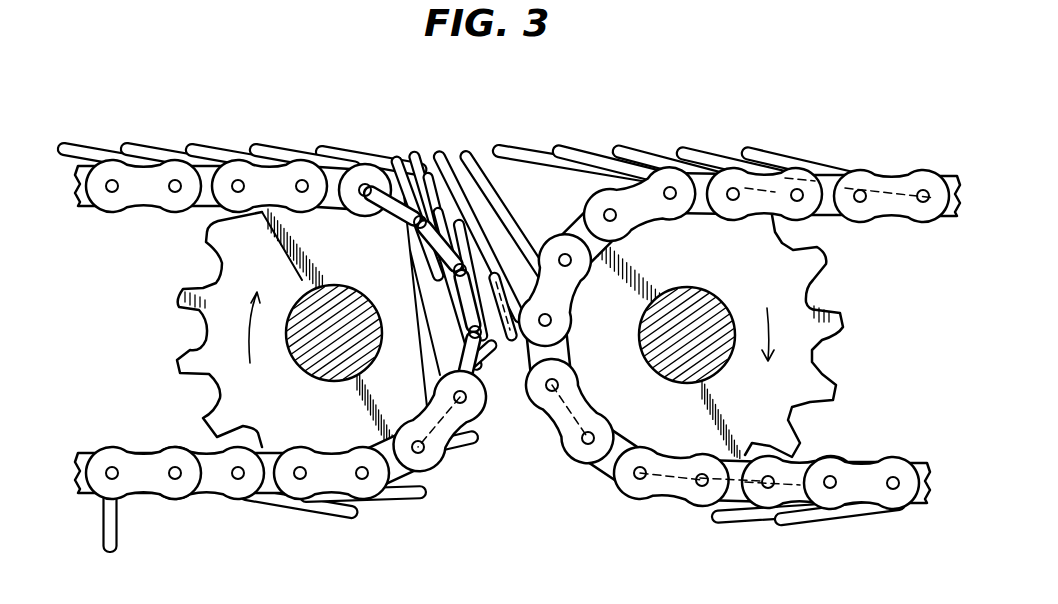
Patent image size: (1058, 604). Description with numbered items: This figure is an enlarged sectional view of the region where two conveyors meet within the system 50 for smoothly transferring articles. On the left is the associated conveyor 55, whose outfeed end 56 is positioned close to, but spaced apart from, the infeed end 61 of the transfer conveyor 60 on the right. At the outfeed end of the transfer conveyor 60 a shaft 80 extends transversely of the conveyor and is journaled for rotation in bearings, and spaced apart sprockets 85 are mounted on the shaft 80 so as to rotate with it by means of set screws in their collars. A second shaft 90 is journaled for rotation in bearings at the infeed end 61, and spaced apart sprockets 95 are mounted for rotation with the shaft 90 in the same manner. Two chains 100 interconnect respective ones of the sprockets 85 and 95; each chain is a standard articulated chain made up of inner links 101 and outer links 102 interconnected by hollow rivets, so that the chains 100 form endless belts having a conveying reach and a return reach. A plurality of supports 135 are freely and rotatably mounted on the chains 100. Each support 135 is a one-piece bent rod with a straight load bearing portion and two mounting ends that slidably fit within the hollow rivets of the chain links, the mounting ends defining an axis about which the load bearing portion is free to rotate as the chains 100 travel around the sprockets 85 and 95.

The system 50 is at (345, 74).
The associated conveyor 55 is at (116, 120).
The outfeed end 56 is at (295, 135).
The transfer conveyor 60 is at (794, 110).
The infeed end 61 is at (793, 144).
The shaft 80 is at (353, 307).
The sprockets 85 is at (182, 360).
The shaft 90 is at (705, 305).
The sprockets 95 is at (837, 385).
The chains 100 is at (221, 506).
The inner links 101 is at (145, 458).
The outer links 102 is at (147, 200).
The supports 135 is at (211, 137).